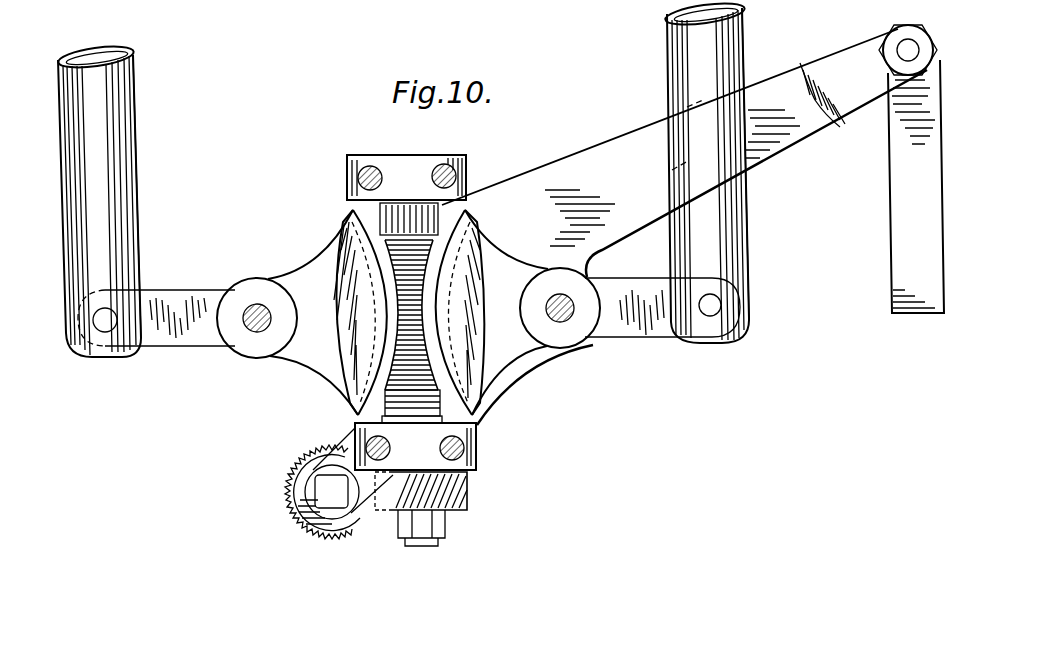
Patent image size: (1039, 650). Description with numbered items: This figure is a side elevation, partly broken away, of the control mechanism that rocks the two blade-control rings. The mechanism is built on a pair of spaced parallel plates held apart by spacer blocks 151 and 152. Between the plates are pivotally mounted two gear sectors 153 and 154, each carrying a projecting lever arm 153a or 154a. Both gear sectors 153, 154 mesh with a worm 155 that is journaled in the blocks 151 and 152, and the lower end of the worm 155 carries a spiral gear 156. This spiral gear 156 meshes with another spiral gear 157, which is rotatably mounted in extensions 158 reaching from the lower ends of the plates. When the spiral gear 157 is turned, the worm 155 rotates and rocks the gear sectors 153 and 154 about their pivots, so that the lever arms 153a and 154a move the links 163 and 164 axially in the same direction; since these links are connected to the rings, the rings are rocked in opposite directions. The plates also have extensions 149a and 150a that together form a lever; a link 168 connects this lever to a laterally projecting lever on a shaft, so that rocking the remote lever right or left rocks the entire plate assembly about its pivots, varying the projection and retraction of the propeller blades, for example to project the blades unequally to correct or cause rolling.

The extension 149a is at (773, 97).
The extension 150a is at (870, 83).
The spacer block 151 is at (405, 170).
The spacer block 152 is at (478, 450).
The gear sector 153 is at (345, 237).
The lever arm 153a is at (180, 340).
The gear sector 154 is at (470, 215).
The lever arm 154a is at (652, 322).
The worm 155 is at (440, 212).
The spiral gear 156 is at (468, 493).
The spiral gear 157 is at (303, 464).
The extension 158 is at (347, 446).
The link 163 is at (110, 130).
The link 164 is at (686, 46).
The link 168 is at (922, 224).